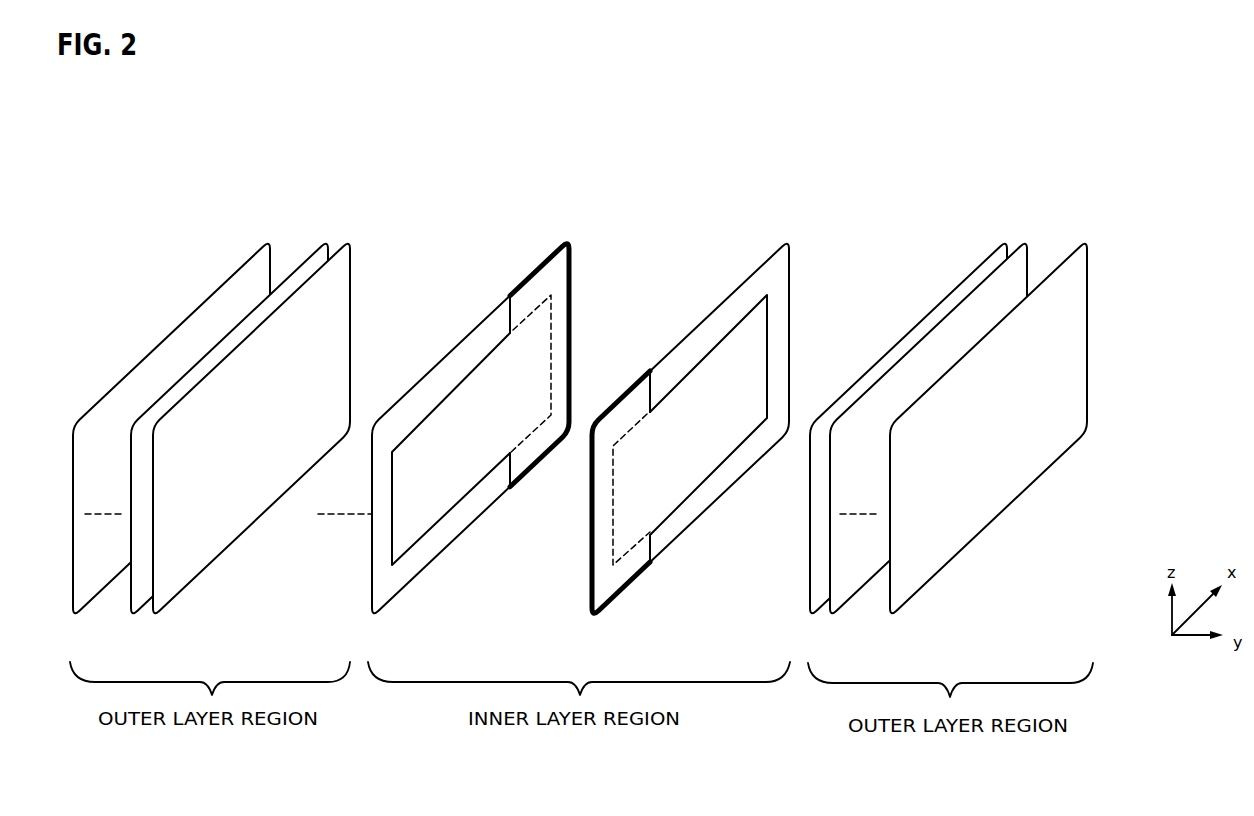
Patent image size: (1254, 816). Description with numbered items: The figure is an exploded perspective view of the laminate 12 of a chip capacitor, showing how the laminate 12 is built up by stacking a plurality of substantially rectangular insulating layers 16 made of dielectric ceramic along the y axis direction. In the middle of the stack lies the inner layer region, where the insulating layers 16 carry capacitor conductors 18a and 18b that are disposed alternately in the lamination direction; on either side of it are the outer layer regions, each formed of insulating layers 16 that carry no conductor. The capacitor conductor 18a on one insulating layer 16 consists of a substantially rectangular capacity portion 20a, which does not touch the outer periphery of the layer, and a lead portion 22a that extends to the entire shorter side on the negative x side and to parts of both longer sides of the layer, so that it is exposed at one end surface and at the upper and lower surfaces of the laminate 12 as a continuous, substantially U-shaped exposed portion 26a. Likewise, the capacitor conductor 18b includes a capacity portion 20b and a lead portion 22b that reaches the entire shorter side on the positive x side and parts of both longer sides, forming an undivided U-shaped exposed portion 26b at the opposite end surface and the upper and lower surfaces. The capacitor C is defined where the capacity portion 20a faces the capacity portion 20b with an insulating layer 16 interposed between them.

The laminate 12 is at (250, 114).
The insulating layer 16 is at (264, 239).
The capacitor conductor 18a is at (712, 316).
The capacitor conductor 18b is at (465, 357).
The capacity portion 20a is at (756, 340).
The capacity portion 20b is at (425, 443).
The lead portion 22a is at (626, 567).
The lead portion 22b is at (523, 458).
The exposed portion 26a is at (590, 582).
The exposed portion 26b is at (574, 280).
The capacitor C is at (660, 251).